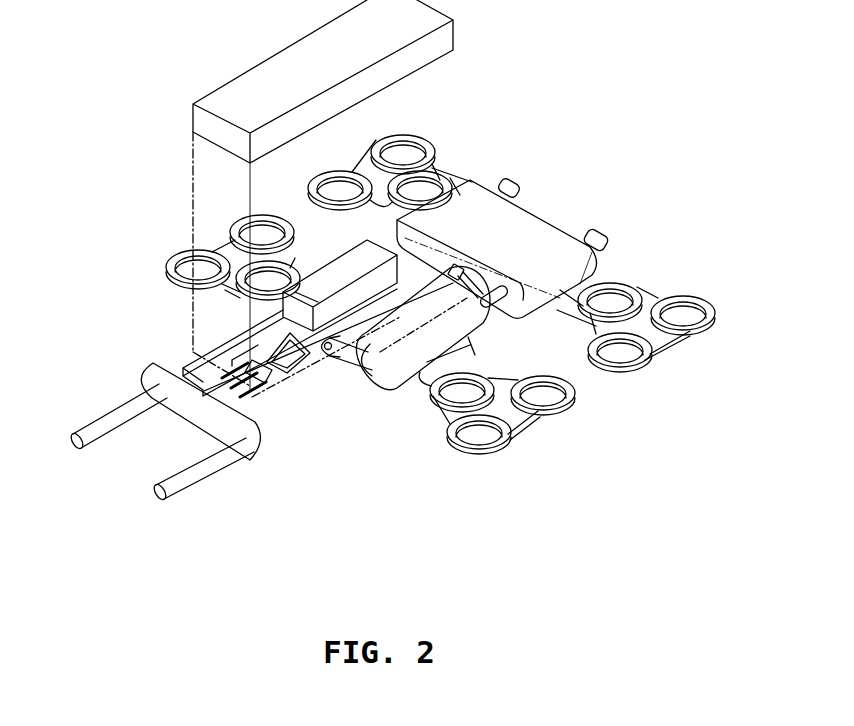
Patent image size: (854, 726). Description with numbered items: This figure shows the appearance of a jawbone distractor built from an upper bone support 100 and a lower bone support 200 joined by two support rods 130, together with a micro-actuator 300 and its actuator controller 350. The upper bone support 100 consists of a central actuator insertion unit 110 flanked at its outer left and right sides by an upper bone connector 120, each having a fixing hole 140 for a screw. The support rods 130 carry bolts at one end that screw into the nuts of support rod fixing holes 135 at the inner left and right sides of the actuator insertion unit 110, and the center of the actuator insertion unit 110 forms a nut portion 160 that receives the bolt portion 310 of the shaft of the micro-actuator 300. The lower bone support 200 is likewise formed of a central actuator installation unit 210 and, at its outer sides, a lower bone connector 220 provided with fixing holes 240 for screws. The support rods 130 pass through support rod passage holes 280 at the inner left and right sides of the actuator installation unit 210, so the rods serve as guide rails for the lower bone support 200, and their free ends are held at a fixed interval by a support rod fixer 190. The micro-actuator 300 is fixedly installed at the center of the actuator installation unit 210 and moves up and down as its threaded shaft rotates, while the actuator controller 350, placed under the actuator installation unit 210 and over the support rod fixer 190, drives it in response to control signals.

The upper bone support 100 is at (561, 224).
The actuator insertion unit 110 is at (518, 228).
The upper bone connector 120 is at (653, 332).
The support rod 130 is at (153, 492).
The support rod fixing hole 135 is at (594, 250).
The fixing hole 140 is at (693, 315).
The nut portion 160 is at (400, 237).
The support rod fixer 190 is at (193, 413).
The lower bone support 200 is at (405, 410).
The actuator installation unit 210 is at (320, 325).
The lower bone connector 220 is at (508, 412).
The fixing hole 240 is at (547, 398).
The support rod passage hole 280 is at (380, 372).
The micro-actuator 300 is at (342, 340).
The bolt portion 310 is at (482, 307).
The actuator controller 350 is at (270, 380).